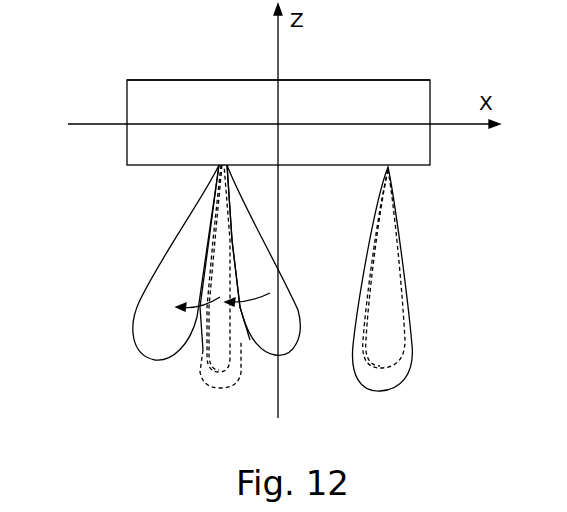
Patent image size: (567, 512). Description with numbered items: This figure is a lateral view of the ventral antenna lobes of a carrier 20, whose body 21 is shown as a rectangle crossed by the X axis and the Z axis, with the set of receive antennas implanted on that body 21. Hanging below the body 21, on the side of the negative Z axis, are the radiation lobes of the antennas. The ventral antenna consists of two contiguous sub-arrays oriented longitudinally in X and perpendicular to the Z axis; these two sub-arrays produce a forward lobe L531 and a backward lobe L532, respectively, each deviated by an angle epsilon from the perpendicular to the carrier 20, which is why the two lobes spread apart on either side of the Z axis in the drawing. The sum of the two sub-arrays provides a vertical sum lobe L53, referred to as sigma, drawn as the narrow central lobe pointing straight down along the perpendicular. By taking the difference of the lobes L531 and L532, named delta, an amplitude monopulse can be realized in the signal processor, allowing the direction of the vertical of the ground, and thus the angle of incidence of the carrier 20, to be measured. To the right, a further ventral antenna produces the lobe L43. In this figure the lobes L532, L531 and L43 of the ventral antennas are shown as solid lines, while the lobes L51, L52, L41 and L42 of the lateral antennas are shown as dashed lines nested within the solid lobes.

The carrier 20 is at (120, 60).
The body 21 is at (338, 80).
The backward lobe L532 is at (165, 247).
The forward lobe L531 is at (293, 285).
The vertical sum lobe L53 is at (222, 386).
The lobe of lateral antenna 51 L51 is at (203, 352).
The lobe of lateral antenna 52 L52 is at (215, 267).
The lobe of ventral antenna 43 L43 is at (412, 290).
The lobe of lateral antenna 41 L41 is at (394, 358).
The lobe of lateral antenna 42 L42 is at (377, 268).